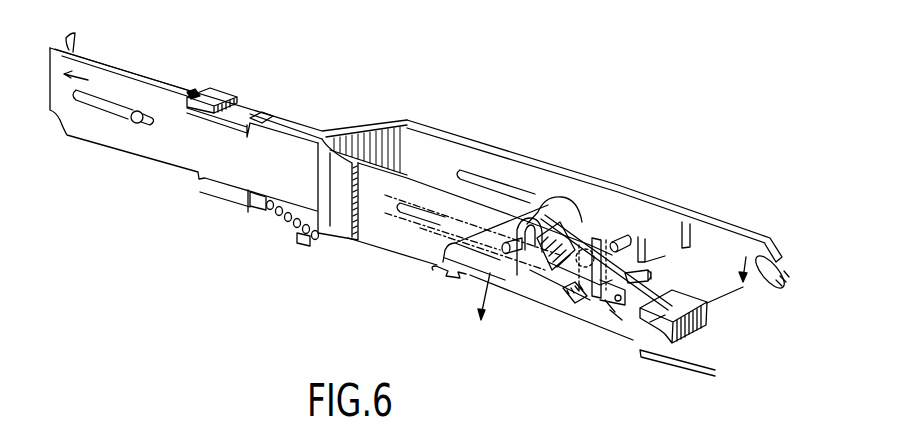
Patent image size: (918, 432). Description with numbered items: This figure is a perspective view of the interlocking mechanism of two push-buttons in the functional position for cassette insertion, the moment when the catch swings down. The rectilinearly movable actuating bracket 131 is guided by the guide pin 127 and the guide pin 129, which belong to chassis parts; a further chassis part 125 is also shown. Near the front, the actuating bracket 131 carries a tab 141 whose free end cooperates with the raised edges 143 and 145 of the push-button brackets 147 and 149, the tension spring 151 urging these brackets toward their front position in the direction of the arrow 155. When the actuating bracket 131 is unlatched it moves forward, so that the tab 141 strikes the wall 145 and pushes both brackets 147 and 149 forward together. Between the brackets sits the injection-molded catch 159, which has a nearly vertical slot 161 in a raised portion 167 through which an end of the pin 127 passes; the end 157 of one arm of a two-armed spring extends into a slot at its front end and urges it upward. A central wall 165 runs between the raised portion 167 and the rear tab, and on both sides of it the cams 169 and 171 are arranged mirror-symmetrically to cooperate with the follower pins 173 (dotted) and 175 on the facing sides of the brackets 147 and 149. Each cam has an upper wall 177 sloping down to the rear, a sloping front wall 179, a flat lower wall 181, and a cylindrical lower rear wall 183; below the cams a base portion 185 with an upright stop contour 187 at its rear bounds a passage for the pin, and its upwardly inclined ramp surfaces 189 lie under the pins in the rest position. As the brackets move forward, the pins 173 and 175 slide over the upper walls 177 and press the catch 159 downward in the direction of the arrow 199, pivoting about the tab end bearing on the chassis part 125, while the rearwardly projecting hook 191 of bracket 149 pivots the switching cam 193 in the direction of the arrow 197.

The chassis part 125 is at (698, 353).
The guide pin 127 is at (497, 267).
The guide pin 129 is at (145, 127).
The actuating bracket 131 is at (232, 195).
The tab 141 is at (217, 97).
The raised edge 143 is at (267, 113).
The raised edge 145 is at (191, 95).
The push-button bracket 147 is at (108, 140).
The push-button bracket 149 is at (115, 62).
The tension spring 151 is at (293, 227).
The arrow 155 is at (76, 77).
The spring arm end 157 is at (440, 274).
The catch 159 is at (574, 186).
The slot 161 is at (518, 273).
The central wall 165 is at (610, 233).
The raised portion 167 is at (548, 198).
The cam 169 is at (613, 290).
The cam 171 is at (647, 263).
The follower pin 173 is at (597, 240).
The follower pin 175 is at (632, 230).
The upper wall 177 is at (653, 273).
The front wall 179 is at (560, 293).
The lower wall 181 is at (618, 300).
The lower rear wall 183 is at (620, 305).
The base portion 185 is at (530, 312).
The stop contour 187 is at (633, 340).
The ramp surface 189 is at (655, 312).
The hook 191 is at (731, 228).
The switching cam 193 is at (768, 288).
The arrow 197 is at (746, 257).
The arrow 199 is at (478, 292).